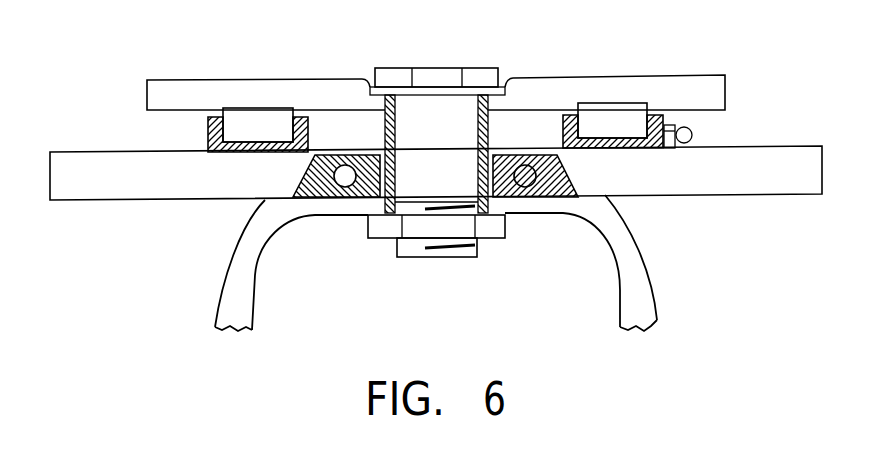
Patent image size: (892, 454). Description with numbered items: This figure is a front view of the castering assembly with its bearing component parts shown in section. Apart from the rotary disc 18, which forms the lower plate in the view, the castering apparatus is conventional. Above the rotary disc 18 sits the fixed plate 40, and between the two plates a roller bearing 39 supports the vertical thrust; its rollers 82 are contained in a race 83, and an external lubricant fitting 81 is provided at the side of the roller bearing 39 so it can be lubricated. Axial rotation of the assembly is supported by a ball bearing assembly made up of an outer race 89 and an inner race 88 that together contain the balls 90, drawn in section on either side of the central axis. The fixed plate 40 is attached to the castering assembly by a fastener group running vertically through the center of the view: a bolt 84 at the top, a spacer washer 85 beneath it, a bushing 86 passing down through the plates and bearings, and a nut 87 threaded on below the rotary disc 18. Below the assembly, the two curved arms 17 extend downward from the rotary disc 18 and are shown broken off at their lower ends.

The frame 17 is at (655, 285).
The rotary disc 18 is at (822, 168).
The roller bearing 39 is at (208, 138).
The fixed plate 40 is at (703, 75).
The external lubricant fitting 81 is at (693, 138).
The rollers 82 is at (258, 115).
The race 83 is at (567, 110).
The bolt 84 is at (430, 67).
The spacer washer 85 is at (507, 86).
The bushing 86 is at (378, 98).
The nut 87 is at (507, 227).
The inner race 88 is at (378, 156).
The outer race 89 is at (293, 184).
The balls 90 is at (342, 187).